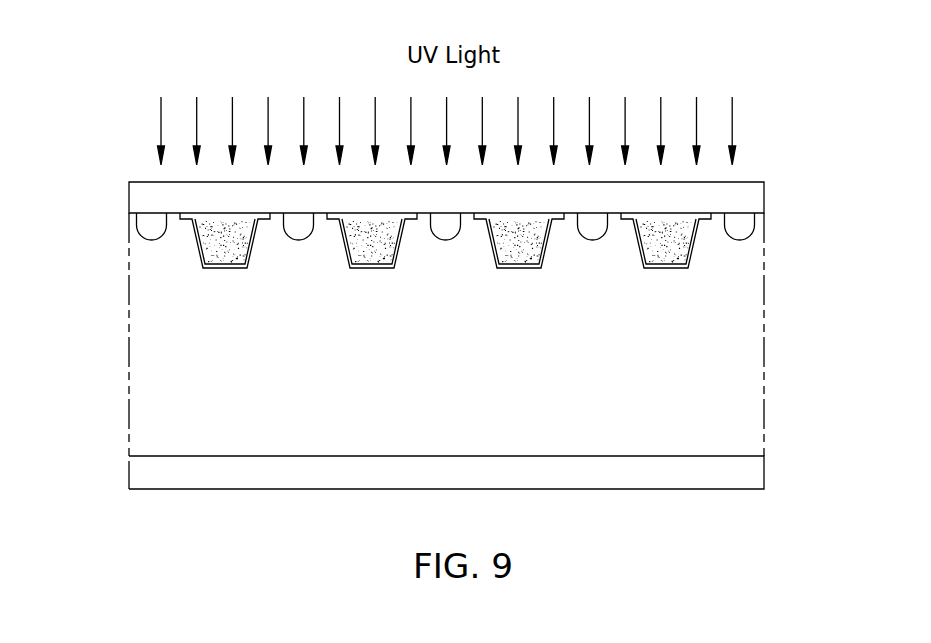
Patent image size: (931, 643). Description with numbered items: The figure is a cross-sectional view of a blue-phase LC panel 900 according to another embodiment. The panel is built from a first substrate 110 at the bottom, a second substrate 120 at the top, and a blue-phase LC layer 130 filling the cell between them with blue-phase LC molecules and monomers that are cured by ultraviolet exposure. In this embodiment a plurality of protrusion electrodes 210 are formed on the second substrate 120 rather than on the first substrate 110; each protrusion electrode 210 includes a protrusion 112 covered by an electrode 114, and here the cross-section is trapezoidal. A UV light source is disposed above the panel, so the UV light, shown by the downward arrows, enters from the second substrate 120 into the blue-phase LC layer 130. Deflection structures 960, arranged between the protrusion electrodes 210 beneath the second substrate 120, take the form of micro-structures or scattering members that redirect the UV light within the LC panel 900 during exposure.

The blue-phase LC panel 900 is at (768, 63).
The second substrate 120 is at (753, 203).
The blue-phase LC layer 130 is at (755, 327).
The first substrate 110 is at (755, 476).
The deflection structure 960 is at (150, 227).
The protrusion electrode 210 is at (367, 254).
The protrusion 112 is at (215, 226).
The electrode 114 is at (203, 257).